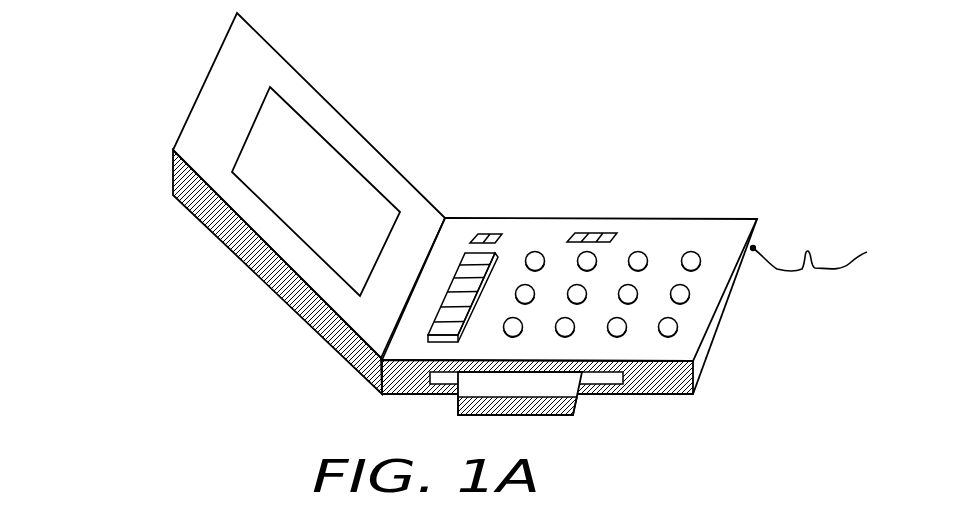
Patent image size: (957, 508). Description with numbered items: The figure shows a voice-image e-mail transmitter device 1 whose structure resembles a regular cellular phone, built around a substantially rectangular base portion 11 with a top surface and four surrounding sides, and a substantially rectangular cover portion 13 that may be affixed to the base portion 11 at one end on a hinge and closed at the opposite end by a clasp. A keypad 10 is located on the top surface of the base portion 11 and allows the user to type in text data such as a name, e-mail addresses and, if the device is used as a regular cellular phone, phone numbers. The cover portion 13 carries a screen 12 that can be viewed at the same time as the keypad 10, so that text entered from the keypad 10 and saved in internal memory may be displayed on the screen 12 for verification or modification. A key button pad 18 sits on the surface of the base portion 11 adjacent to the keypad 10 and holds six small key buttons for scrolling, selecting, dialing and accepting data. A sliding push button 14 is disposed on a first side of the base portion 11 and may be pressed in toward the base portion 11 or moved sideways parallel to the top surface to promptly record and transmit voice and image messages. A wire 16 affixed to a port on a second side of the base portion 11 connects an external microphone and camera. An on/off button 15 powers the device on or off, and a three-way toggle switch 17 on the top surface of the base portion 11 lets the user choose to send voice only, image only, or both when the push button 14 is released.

The voice-image e-mail transmitter device 1 is at (158, 127).
The keypad 10 is at (694, 259).
The base portion 11 is at (705, 352).
The screen 12 is at (318, 157).
The cover portion 13 is at (278, 273).
The sliding push button 14 is at (555, 388).
The on/off button 15 is at (477, 235).
The wire 16 is at (778, 270).
The three-way toggle switch 17 is at (597, 235).
The key button pad 18 is at (480, 275).